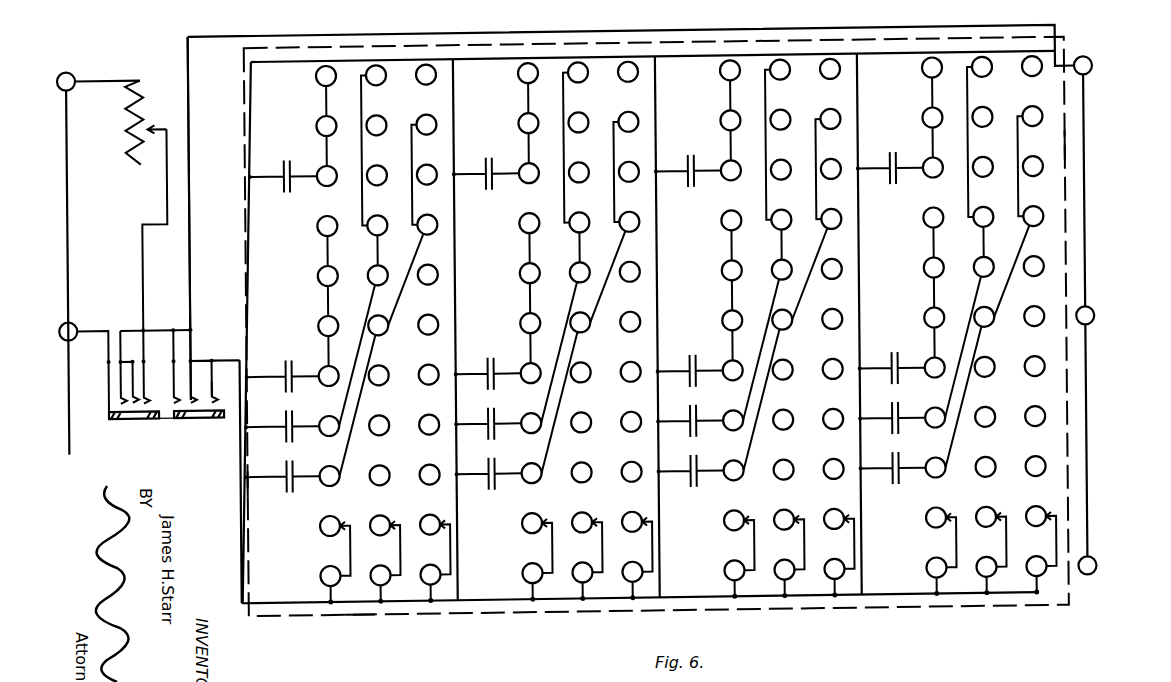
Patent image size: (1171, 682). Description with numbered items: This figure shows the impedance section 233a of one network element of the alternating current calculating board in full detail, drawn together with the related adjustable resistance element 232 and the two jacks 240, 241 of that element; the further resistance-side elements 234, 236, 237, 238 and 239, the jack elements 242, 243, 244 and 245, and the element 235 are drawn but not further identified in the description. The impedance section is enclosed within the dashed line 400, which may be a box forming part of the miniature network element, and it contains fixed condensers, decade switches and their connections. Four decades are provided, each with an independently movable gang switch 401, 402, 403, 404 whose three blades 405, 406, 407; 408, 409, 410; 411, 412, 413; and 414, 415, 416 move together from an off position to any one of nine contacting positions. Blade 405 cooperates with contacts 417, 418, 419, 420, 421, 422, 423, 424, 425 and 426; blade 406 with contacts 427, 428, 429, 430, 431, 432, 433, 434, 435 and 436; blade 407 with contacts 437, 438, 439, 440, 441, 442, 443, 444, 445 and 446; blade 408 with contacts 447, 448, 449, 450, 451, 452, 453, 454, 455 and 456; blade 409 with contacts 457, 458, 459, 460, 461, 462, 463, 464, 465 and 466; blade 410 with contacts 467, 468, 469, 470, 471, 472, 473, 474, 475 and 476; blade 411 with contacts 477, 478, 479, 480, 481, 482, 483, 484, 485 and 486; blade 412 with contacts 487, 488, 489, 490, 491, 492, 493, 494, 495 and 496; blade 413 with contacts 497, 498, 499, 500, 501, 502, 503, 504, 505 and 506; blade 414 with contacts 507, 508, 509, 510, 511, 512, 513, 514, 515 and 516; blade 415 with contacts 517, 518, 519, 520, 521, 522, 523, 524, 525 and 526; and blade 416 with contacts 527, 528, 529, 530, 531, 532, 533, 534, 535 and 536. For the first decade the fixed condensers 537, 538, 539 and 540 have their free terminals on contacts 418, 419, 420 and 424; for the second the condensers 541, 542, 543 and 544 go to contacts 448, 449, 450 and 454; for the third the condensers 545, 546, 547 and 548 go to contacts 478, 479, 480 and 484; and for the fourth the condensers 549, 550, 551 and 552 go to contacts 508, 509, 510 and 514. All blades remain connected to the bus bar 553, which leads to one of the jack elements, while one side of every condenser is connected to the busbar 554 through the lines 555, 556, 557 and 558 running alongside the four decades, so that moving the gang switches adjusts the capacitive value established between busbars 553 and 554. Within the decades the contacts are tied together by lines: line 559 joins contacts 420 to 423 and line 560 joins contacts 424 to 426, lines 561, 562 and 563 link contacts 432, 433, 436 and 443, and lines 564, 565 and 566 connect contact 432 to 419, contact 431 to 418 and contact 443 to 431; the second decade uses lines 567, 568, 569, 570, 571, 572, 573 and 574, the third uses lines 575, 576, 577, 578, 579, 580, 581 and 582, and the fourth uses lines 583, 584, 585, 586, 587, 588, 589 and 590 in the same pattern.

The resistor 232 is at (128, 114).
The adjustable tap 234 is at (157, 127).
The contact 236 is at (140, 381).
The contact 237 is at (212, 393).
The conductor 238 is at (67, 222).
The conductor 239 is at (1086, 251).
The plate 240 is at (110, 424).
The plate 241 is at (205, 428).
The contact 242 is at (122, 390).
The contact 243 is at (202, 388).
The plate segment 244 is at (160, 418).
The plate segment 245 is at (228, 420).
The cable 233a is at (1122, 144).
The enclosure line 235 is at (244, 494).
The common bus 400 is at (540, 605).
The section 401 is at (345, 354).
The section 402 is at (552, 350).
The section 403 is at (754, 347).
The section 404 is at (958, 344).
The terminal 405 is at (346, 557).
The terminal 406 is at (396, 557).
The terminal 407 is at (446, 557).
The terminal 408 is at (548, 557).
The terminal 409 is at (598, 557).
The terminal 410 is at (648, 557).
The terminal 411 is at (750, 557).
The terminal 412 is at (800, 557).
The terminal 413 is at (850, 557).
The terminal 414 is at (952, 557).
The terminal 415 is at (1002, 557).
The terminal 416 is at (1052, 557).
The terminal 417 is at (315, 527).
The terminal 418 is at (317, 483).
The terminal 419 is at (317, 433).
The terminal 420 is at (317, 383).
The terminal 421 is at (315, 329).
The terminal 422 is at (315, 279).
The terminal 423 is at (315, 229).
The terminal 424 is at (317, 183).
The terminal 425 is at (315, 129).
The terminal 426 is at (315, 79).
The terminal 427 is at (373, 515).
The terminal 428 is at (372, 486).
The terminal 429 is at (372, 436).
The terminal 430 is at (372, 386).
The terminal 431 is at (372, 336).
The terminal 432 is at (372, 286).
The terminal 433 is at (372, 236).
The terminal 434 is at (372, 186).
The terminal 435 is at (372, 136).
The terminal 436 is at (372, 86).
The terminal 437 is at (423, 515).
The terminal 438 is at (422, 486).
The terminal 439 is at (422, 436).
The terminal 440 is at (422, 386).
The terminal 441 is at (422, 336).
The terminal 442 is at (422, 286).
The terminal 443 is at (422, 236).
The terminal 444 is at (422, 186).
The terminal 445 is at (422, 136).
The terminal 446 is at (422, 86).
The terminal 447 is at (517, 527).
The terminal 448 is at (519, 483).
The terminal 449 is at (519, 433).
The terminal 450 is at (519, 383).
The terminal 451 is at (517, 329).
The terminal 452 is at (517, 279).
The terminal 453 is at (517, 229).
The terminal 454 is at (519, 183).
The terminal 455 is at (517, 129).
The terminal 456 is at (517, 79).
The terminal 457 is at (575, 515).
The terminal 458 is at (574, 486).
The terminal 459 is at (574, 436).
The terminal 460 is at (574, 386).
The terminal 461 is at (574, 336).
The terminal 462 is at (574, 286).
The terminal 463 is at (574, 236).
The terminal 464 is at (574, 186).
The terminal 465 is at (574, 136).
The terminal 466 is at (574, 86).
The terminal 467 is at (625, 515).
The terminal 468 is at (624, 486).
The terminal 469 is at (624, 436).
The terminal 470 is at (624, 386).
The terminal 471 is at (624, 336).
The terminal 472 is at (624, 286).
The terminal 473 is at (624, 236).
The terminal 474 is at (624, 186).
The terminal 475 is at (624, 136).
The terminal 476 is at (624, 86).
The terminal 477 is at (719, 527).
The terminal 478 is at (721, 483).
The terminal 479 is at (721, 433).
The terminal 480 is at (721, 383).
The terminal 481 is at (719, 329).
The terminal 482 is at (719, 279).
The terminal 483 is at (719, 229).
The terminal 484 is at (721, 183).
The terminal 485 is at (719, 129).
The terminal 486 is at (719, 79).
The terminal 487 is at (777, 515).
The terminal 488 is at (776, 486).
The terminal 489 is at (776, 436).
The terminal 490 is at (776, 386).
The terminal 491 is at (776, 336).
The terminal 492 is at (776, 286).
The terminal 493 is at (776, 236).
The terminal 494 is at (776, 186).
The terminal 495 is at (776, 136).
The terminal 496 is at (776, 86).
The terminal 497 is at (827, 515).
The terminal 498 is at (826, 486).
The terminal 499 is at (826, 436).
The terminal 500 is at (826, 386).
The terminal 501 is at (826, 336).
The terminal 502 is at (826, 286).
The terminal 503 is at (826, 236).
The terminal 504 is at (826, 186).
The terminal 505 is at (826, 136).
The terminal 506 is at (826, 86).
The terminal 507 is at (921, 527).
The terminal 508 is at (923, 483).
The terminal 509 is at (923, 433).
The terminal 510 is at (923, 383).
The terminal 511 is at (921, 329).
The terminal 512 is at (921, 279).
The terminal 513 is at (921, 229).
The terminal 514 is at (923, 183).
The terminal 515 is at (921, 129).
The terminal 516 is at (921, 79).
The terminal 517 is at (979, 515).
The terminal 518 is at (978, 486).
The terminal 519 is at (978, 436).
The terminal 520 is at (978, 386).
The terminal 521 is at (978, 336).
The terminal 522 is at (978, 286).
The terminal 523 is at (978, 236).
The terminal 524 is at (978, 186).
The terminal 525 is at (978, 136).
The terminal 526 is at (978, 86).
The terminal 527 is at (1029, 515).
The terminal 528 is at (1028, 486).
The terminal 529 is at (1028, 436).
The terminal 530 is at (1028, 386).
The terminal 531 is at (1028, 336).
The terminal 532 is at (1028, 286).
The terminal 533 is at (1028, 236).
The terminal 534 is at (1028, 186).
The terminal 535 is at (1028, 136).
The terminal 536 is at (1028, 86).
The capacitor 537 is at (280, 496).
The capacitor 538 is at (276, 419).
The capacitor 539 is at (276, 369).
The capacitor 540 is at (276, 169).
The capacitor 541 is at (482, 496).
The capacitor 542 is at (478, 419).
The capacitor 543 is at (478, 369).
The capacitor 544 is at (478, 169).
The capacitor 545 is at (684, 496).
The capacitor 546 is at (680, 419).
The capacitor 547 is at (680, 369).
The capacitor 548 is at (680, 169).
The capacitor 549 is at (886, 496).
The capacitor 550 is at (882, 419).
The capacitor 551 is at (882, 369).
The capacitor 552 is at (882, 169).
The supply conductor 553 is at (505, 606).
The enclosure 554 is at (617, 49).
The conductor 555 is at (244, 272).
The conductor 556 is at (453, 318).
The conductor 557 is at (656, 313).
The conductor 558 is at (858, 263).
The connecting wire 559 is at (324, 303).
The connecting wire 560 is at (324, 104).
The connecting wire 561 is at (374, 257).
The connecting wire 562 is at (361, 159).
The connecting wire 563 is at (411, 174).
The connecting wire 564 is at (362, 312).
The connecting wire 565 is at (365, 360).
The connecting wire 566 is at (407, 258).
The connecting wire 567 is at (526, 297).
The connecting wire 568 is at (526, 104).
The connecting wire 569 is at (576, 255).
The connecting wire 570 is at (563, 148).
The connecting wire 571 is at (613, 158).
The connecting wire 572 is at (563, 309).
The connecting wire 573 is at (556, 407).
The connecting wire 574 is at (611, 253).
The connecting wire 575 is at (728, 294).
The connecting wire 576 is at (728, 104).
The connecting wire 577 is at (778, 255).
The connecting wire 578 is at (765, 149).
The connecting wire 579 is at (815, 160).
The connecting wire 580 is at (760, 303).
The connecting wire 581 is at (758, 405).
The connecting wire 582 is at (814, 254).
The connecting wire 583 is at (930, 303).
The connecting wire 584 is at (930, 104).
The connecting wire 585 is at (980, 256).
The connecting wire 586 is at (967, 183).
The connecting wire 587 is at (1017, 167).
The connecting wire 588 is at (976, 300).
The connecting wire 589 is at (965, 398).
The connecting wire 590 is at (1020, 256).